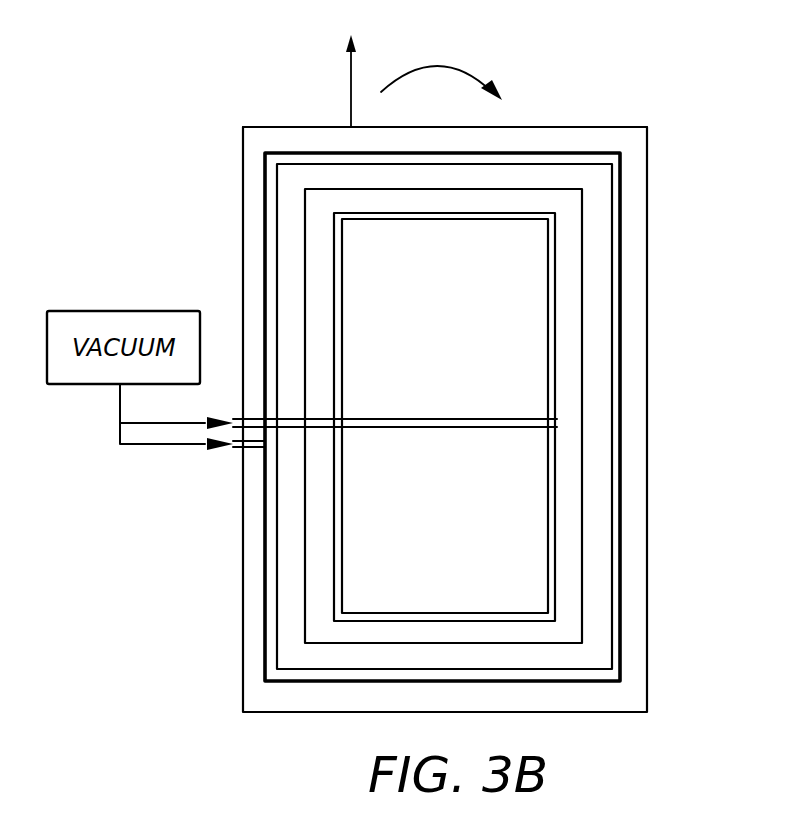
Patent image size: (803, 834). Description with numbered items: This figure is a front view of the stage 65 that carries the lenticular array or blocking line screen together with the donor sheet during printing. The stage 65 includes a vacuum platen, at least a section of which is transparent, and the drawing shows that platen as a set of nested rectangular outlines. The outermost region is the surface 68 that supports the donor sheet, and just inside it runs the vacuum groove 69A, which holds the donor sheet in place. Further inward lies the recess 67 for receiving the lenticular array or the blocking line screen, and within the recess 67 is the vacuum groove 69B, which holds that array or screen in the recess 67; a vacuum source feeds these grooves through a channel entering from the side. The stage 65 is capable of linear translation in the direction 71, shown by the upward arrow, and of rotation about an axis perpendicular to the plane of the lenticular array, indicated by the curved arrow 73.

The stage 65 is at (572, 94).
The recess 67 is at (317, 224).
The surface 68 is at (248, 148).
The vacuum groove 69A is at (272, 160).
The vacuum groove 69B is at (357, 218).
The direction 71 is at (353, 66).
The arrow 73 is at (441, 63).